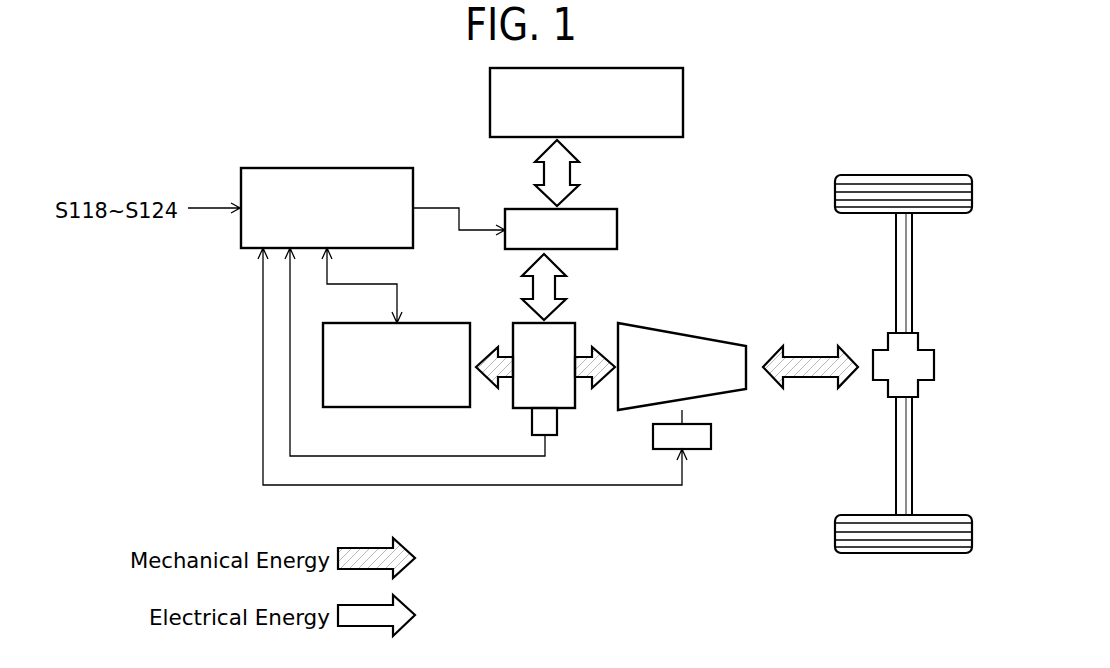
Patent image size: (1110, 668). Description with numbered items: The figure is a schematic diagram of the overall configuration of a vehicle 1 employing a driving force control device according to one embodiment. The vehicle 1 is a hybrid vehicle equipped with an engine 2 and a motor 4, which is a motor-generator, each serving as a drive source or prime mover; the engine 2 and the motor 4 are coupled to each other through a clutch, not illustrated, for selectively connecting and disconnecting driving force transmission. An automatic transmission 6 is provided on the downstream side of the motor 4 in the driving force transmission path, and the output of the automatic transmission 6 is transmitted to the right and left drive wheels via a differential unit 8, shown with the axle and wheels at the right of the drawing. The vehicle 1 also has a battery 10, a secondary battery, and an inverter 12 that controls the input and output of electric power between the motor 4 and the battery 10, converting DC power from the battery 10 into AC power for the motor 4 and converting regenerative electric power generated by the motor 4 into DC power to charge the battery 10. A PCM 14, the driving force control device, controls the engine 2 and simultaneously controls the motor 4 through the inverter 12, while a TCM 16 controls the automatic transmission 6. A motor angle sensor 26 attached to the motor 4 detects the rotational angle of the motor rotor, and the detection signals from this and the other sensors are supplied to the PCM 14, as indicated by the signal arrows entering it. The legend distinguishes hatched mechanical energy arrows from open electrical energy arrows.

The vehicle 1 is at (891, 59).
The engine 2 is at (437, 323).
The motor 4 is at (575, 323).
The automatic transmission 6 is at (702, 338).
The differential unit 8 is at (922, 352).
The battery 10 is at (627, 68).
The inverter 12 is at (594, 209).
The PCM 14 is at (357, 168).
The TCM 16 is at (711, 437).
The motor angle sensor 26 is at (558, 424).